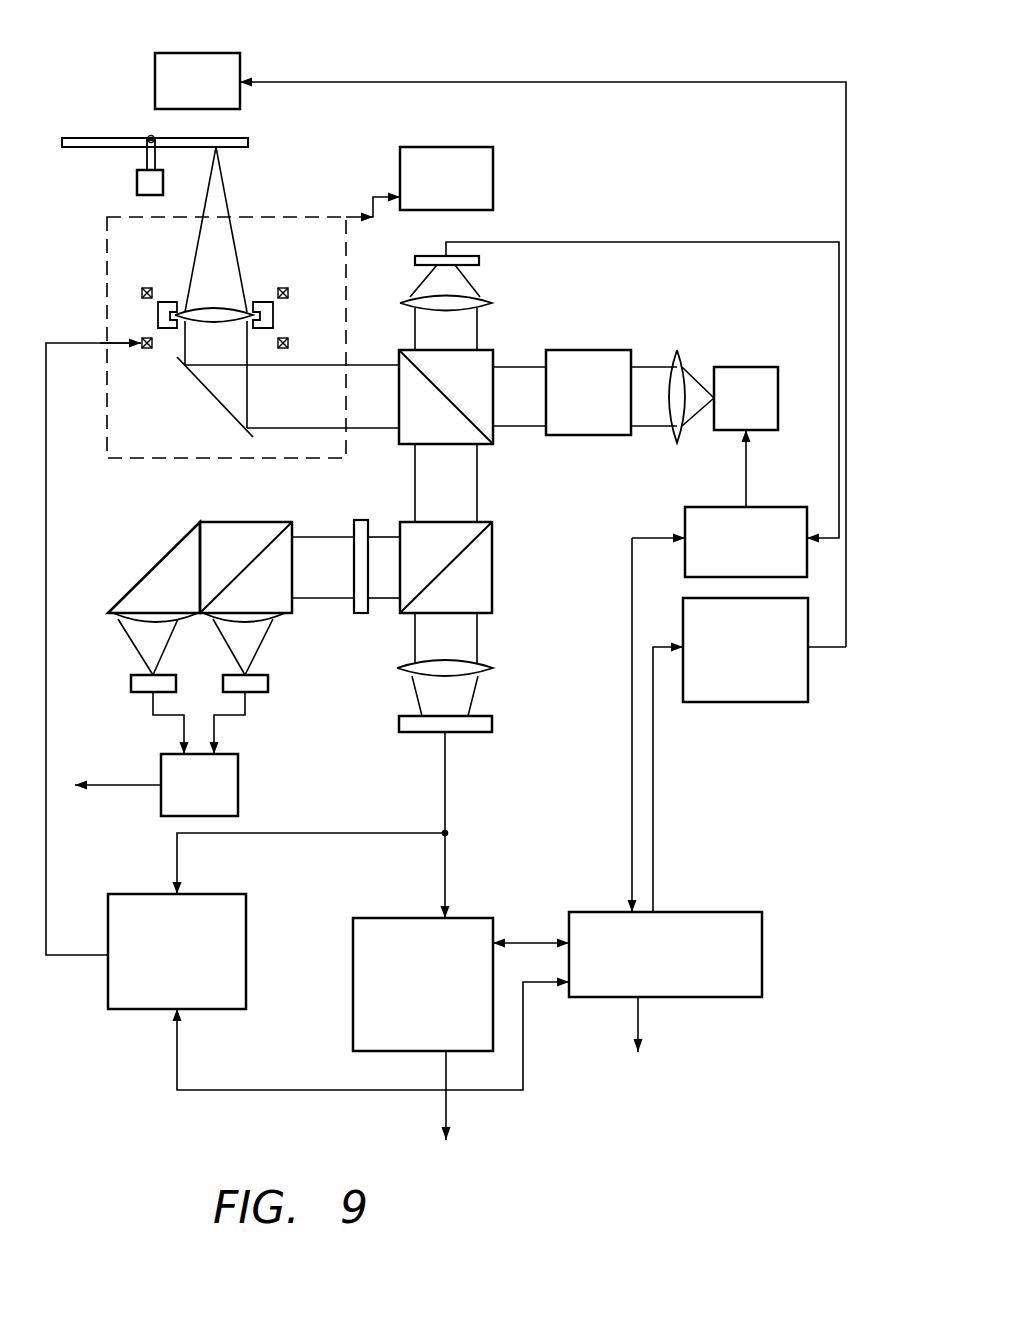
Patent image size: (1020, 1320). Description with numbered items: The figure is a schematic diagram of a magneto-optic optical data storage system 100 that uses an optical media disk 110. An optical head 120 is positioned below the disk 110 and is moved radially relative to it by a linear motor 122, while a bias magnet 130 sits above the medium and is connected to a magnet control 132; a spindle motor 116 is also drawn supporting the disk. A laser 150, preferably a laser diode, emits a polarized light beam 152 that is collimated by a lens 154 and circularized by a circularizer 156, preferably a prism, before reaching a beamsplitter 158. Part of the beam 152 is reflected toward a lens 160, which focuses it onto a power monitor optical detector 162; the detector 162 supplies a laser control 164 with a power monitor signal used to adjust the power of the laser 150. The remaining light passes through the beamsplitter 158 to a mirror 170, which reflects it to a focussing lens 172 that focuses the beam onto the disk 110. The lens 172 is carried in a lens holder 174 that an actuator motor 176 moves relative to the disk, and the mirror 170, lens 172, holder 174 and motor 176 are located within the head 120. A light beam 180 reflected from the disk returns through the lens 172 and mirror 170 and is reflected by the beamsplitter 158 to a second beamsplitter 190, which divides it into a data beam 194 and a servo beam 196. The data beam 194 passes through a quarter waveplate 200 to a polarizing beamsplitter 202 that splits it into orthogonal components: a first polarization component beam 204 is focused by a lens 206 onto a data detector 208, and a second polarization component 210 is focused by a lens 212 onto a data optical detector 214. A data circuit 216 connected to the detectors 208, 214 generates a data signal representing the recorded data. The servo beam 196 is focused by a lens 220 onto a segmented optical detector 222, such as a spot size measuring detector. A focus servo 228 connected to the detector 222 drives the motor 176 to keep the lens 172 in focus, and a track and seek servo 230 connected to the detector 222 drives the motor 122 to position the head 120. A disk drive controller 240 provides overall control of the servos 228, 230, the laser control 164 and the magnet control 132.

The optical data storage system 100 is at (238, 1119).
The optical media disk 110 is at (92, 137).
The spindle motor 116 is at (138, 174).
The optical head 120 is at (294, 216).
The linear motor 122 is at (430, 147).
The bias magnet 130 is at (198, 52).
The magnet control 132 is at (715, 703).
The laser 150 is at (755, 366).
The polarized light beam 152 is at (228, 194).
The lens 154 is at (674, 352).
The circularizer 156 is at (593, 350).
The beamsplitter 158 is at (490, 350).
The lens 160 is at (492, 300).
The power monitor optical detector 162 is at (479, 262).
The laser control 164 is at (718, 507).
The mirror 170 is at (200, 378).
The focussing lens 172 is at (185, 307).
The lens holder 174 is at (168, 330).
The actuator motor 176 is at (143, 340).
The reflected light beam 180 is at (197, 260).
The beamsplitter 190 is at (492, 535).
The data beam 194 is at (386, 598).
The servo beam 196 is at (477, 645).
The quarter waveplate 200 is at (357, 520).
The polarizing beamsplitter 202 is at (157, 562).
The first polarization component beam 204 is at (136, 645).
The lens 206 is at (115, 619).
The data detector 208 is at (131, 684).
The second polarization component 210 is at (265, 642).
The lens 212 is at (280, 620).
The data optical detector 214 is at (268, 683).
The data circuit 216 is at (240, 778).
The lens 220 is at (492, 669).
The segmented optical detector 222 is at (492, 718).
The focus servo 228 is at (148, 894).
The track and seek servo 230 is at (383, 918).
The disk drive controller 240 is at (608, 912).